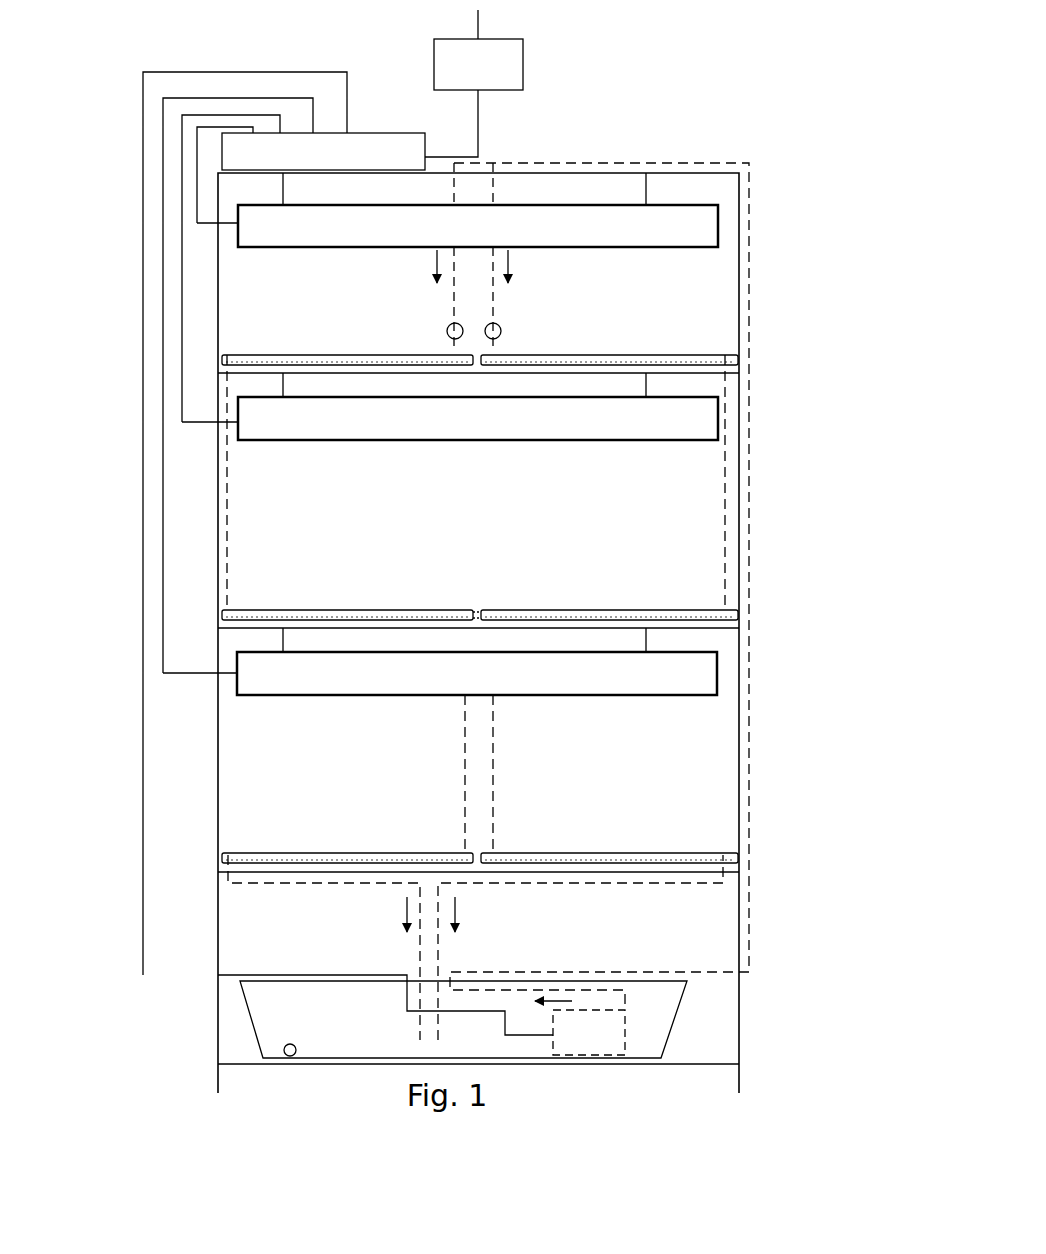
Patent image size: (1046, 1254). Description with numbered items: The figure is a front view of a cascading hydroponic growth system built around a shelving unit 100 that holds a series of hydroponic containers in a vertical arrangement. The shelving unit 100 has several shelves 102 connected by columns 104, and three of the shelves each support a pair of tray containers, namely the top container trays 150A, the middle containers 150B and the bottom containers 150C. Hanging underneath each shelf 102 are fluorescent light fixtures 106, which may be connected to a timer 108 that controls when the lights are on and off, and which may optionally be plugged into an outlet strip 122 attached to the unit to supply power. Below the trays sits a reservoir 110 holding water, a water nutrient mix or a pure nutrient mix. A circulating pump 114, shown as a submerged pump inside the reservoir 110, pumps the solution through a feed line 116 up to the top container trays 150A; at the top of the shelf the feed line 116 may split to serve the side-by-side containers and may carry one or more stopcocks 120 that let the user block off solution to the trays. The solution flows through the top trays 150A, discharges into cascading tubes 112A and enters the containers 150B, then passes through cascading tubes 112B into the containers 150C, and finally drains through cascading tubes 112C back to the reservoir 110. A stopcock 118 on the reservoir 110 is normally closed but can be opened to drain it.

The shelving unit 100 is at (670, 84).
The shelves 102 is at (218, 373).
The columns 104 is at (217, 267).
The fluorescent light fixtures 106 is at (683, 205).
The timer 108 is at (498, 39).
The reservoir 110 is at (250, 995).
The cascading tubes 112A is at (225, 542).
The cascading tubes 112B is at (463, 785).
The cascading tubes 112C is at (418, 958).
The circulating pump 114 is at (638, 1052).
The feed line 116 is at (748, 795).
The stopcock 118 is at (294, 1056).
The stopcocks 120 is at (447, 331).
The outlet strip 122 is at (375, 133).
The top container trays 150A is at (238, 357).
The containers 150B is at (247, 613).
The containers 150C is at (232, 857).